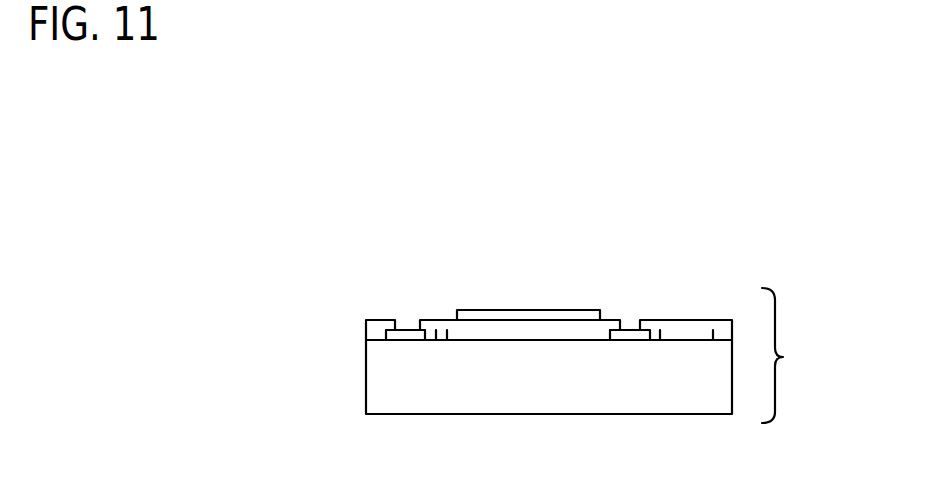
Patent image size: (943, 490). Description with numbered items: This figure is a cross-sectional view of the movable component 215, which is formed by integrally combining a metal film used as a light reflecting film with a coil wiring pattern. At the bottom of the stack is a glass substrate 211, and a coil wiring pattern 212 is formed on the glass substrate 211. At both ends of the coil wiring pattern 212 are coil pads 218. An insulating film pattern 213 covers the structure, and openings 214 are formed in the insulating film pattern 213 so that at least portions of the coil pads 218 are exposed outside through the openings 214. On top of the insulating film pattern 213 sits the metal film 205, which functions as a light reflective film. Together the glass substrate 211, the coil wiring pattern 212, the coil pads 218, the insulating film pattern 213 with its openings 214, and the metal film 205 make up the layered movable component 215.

The metal film 205 is at (537, 311).
The glass substrate 211 is at (366, 383).
The coil wiring pattern 212 is at (662, 338).
The insulating film pattern 213 is at (375, 320).
The openings 214 is at (403, 330).
The movable component 215 is at (806, 355).
The coil pads 218 is at (422, 332).